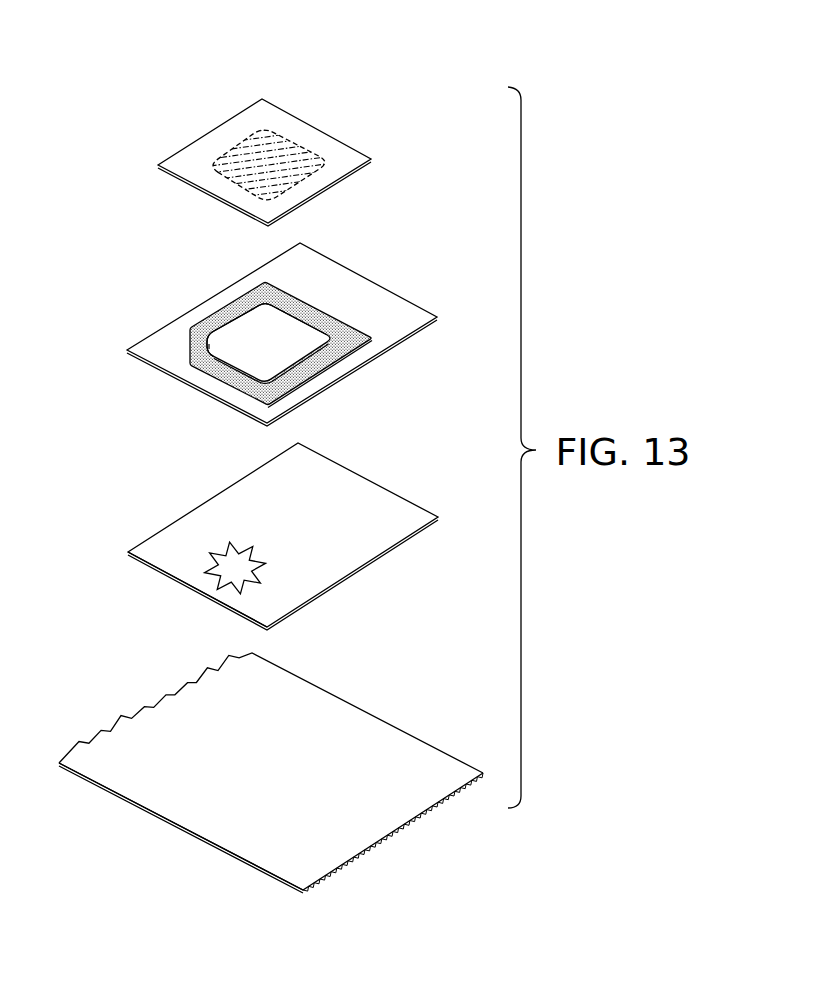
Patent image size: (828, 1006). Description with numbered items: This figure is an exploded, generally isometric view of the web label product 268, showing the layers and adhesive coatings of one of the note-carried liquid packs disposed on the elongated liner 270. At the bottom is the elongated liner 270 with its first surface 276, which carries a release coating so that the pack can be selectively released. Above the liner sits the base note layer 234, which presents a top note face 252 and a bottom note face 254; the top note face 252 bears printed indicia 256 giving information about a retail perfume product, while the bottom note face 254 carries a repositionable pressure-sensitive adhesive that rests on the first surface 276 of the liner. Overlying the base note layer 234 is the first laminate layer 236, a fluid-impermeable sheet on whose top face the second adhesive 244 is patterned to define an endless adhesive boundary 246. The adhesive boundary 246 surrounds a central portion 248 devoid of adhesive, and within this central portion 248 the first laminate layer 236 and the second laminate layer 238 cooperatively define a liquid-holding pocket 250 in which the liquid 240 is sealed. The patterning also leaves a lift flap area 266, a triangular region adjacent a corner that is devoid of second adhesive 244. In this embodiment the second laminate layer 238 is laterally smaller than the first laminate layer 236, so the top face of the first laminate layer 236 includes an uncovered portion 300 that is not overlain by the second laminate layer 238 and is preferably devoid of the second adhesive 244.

The web label product 268 is at (130, 82).
The second laminate layer 238 is at (318, 129).
The liquid 240 is at (258, 150).
The first laminate layer 236 is at (286, 325).
The second adhesive 244 is at (273, 300).
The uncovered portion 300 is at (325, 288).
The adhesive boundary 246 is at (326, 316).
The liquid-holding pocket 250 is at (233, 343).
The central portion 248 is at (248, 357).
The lift flap area 266 is at (161, 342).
The base note layer 234 is at (290, 538).
The printed indicia 256 is at (373, 510).
The top note face 252 is at (198, 563).
The bottom note face 254 is at (215, 607).
The elongated liner 270 is at (271, 775).
The first surface 276 is at (218, 812).